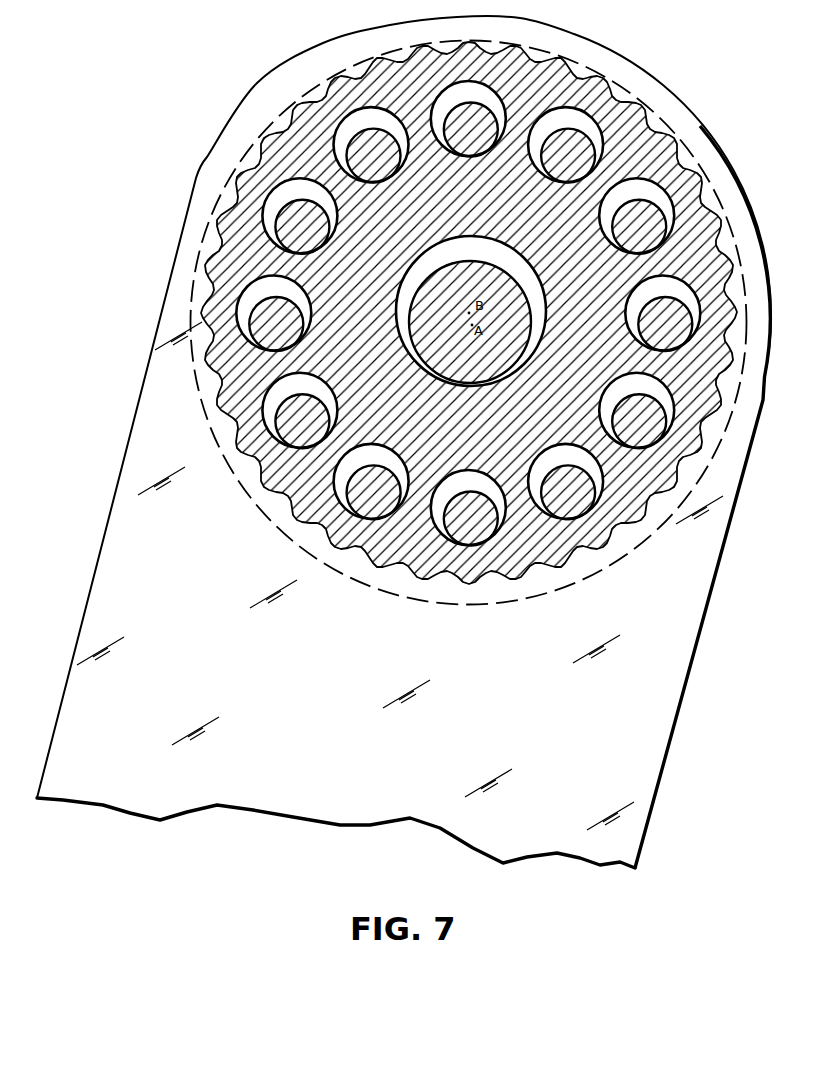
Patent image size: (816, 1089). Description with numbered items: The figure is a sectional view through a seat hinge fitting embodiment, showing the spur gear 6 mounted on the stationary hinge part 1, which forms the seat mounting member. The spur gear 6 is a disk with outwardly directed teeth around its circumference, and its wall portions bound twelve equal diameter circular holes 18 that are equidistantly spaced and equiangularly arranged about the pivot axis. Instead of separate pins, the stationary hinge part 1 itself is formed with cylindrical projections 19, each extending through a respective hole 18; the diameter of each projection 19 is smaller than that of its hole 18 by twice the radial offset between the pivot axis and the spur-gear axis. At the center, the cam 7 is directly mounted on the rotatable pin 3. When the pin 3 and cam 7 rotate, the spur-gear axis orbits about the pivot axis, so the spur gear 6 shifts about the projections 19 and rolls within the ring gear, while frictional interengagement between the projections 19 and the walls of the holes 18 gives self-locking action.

The stationary hinge part 1 is at (686, 643).
The rotatable pin 3 is at (518, 352).
The spur gear 6 is at (665, 132).
The cam 7 is at (538, 292).
The circular holes 18 is at (556, 112).
The cylindrical projections 19 is at (566, 166).